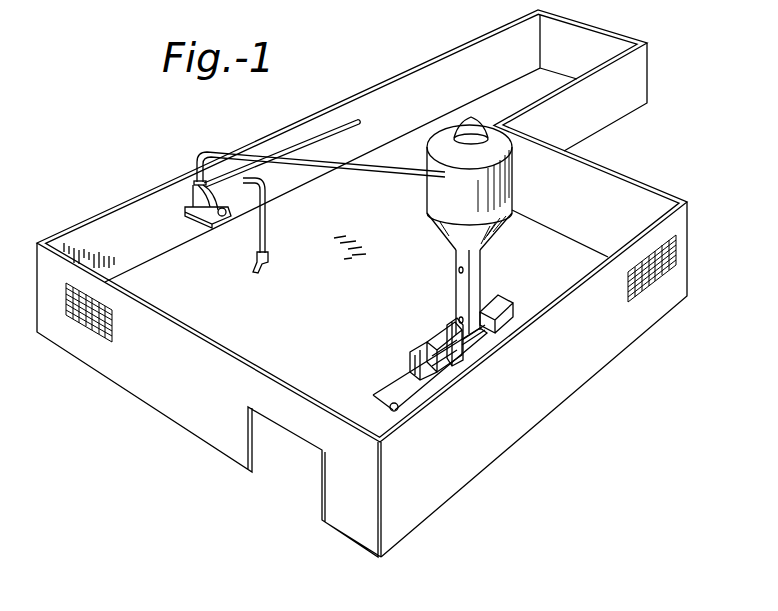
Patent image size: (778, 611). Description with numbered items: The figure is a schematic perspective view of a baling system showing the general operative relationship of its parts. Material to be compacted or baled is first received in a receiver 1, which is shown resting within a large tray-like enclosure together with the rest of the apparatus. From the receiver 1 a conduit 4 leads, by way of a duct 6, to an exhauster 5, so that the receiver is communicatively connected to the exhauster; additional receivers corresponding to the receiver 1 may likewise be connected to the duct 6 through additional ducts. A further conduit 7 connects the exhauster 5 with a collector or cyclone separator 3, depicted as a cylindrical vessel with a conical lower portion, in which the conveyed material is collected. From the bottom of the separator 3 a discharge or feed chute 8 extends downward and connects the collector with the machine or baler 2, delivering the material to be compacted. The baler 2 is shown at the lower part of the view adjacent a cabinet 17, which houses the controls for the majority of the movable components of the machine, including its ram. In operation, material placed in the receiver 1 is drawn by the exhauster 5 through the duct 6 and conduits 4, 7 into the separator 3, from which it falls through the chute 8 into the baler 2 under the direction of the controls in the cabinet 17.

The receiver 1 is at (268, 262).
The machine or baler 2 is at (427, 327).
The collector or cyclone separator 3 is at (433, 198).
The conduit 4 is at (266, 227).
The exhauster 5 is at (192, 195).
The duct 6 is at (359, 125).
The conduit 7 is at (196, 156).
The discharge or feed chute 8 is at (479, 265).
The cabinet 17 is at (498, 302).